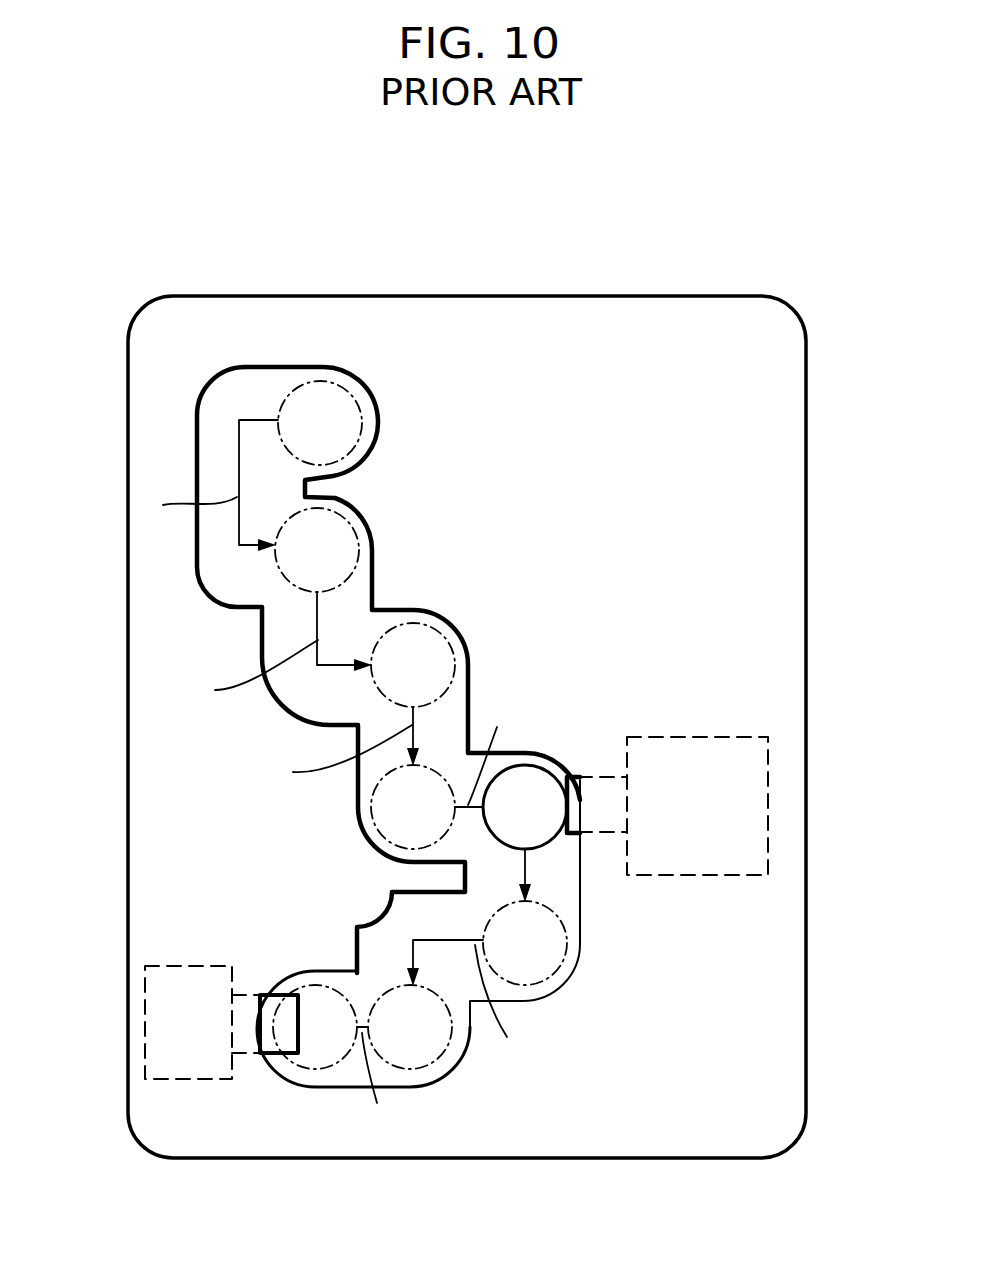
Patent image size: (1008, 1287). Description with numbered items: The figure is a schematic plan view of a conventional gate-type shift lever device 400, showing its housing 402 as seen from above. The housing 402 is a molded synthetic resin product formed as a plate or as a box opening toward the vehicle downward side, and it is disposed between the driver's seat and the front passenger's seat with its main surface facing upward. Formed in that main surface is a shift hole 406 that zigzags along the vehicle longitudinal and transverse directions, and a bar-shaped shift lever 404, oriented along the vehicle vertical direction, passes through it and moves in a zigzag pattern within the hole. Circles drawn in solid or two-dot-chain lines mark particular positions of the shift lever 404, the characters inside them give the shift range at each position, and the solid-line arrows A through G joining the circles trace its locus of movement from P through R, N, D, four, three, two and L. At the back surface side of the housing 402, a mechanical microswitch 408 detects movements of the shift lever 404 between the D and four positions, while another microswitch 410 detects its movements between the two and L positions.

The gate-type shift lever device 400 is at (493, 265).
The housing 402 is at (158, 425).
The shift lever 404 is at (353, 450).
The shift hole 406 is at (283, 372).
The microswitch 408 is at (717, 737).
The microswitch 410 is at (176, 966).